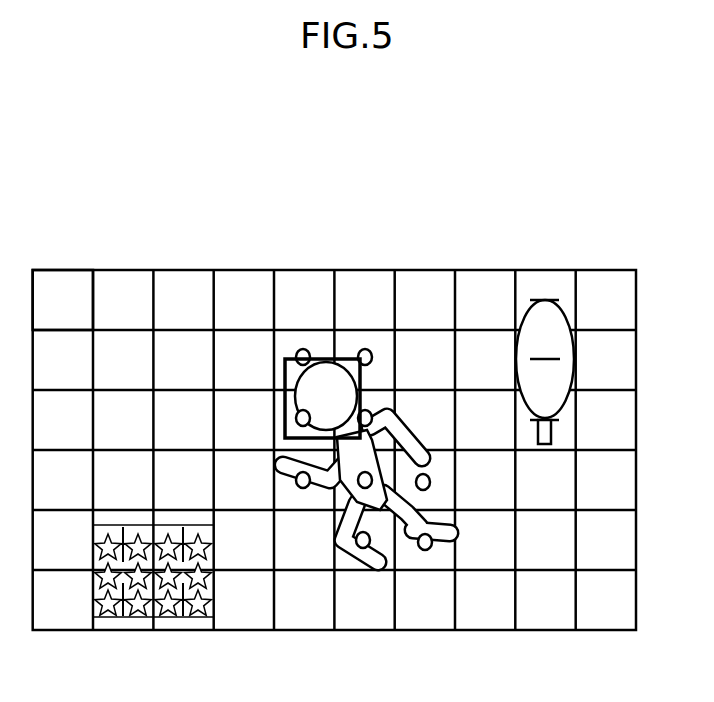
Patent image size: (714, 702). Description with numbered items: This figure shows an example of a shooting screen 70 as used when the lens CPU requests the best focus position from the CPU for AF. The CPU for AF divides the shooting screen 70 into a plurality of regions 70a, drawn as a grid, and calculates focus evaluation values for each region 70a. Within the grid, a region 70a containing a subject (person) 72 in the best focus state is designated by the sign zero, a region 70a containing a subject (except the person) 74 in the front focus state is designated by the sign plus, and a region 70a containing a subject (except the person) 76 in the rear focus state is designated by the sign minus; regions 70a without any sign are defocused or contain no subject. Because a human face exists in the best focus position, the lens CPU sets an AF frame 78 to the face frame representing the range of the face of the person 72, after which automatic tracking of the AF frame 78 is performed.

The shooting screen 70 is at (277, 182).
The region 70a is at (55, 297).
The subject (person) 72 is at (413, 423).
The subject (except the person) 74 is at (223, 608).
The subject (except the person) 76 is at (565, 313).
The AF frame 78 is at (340, 360).